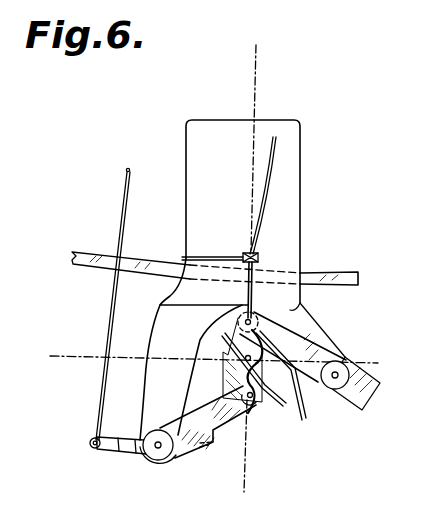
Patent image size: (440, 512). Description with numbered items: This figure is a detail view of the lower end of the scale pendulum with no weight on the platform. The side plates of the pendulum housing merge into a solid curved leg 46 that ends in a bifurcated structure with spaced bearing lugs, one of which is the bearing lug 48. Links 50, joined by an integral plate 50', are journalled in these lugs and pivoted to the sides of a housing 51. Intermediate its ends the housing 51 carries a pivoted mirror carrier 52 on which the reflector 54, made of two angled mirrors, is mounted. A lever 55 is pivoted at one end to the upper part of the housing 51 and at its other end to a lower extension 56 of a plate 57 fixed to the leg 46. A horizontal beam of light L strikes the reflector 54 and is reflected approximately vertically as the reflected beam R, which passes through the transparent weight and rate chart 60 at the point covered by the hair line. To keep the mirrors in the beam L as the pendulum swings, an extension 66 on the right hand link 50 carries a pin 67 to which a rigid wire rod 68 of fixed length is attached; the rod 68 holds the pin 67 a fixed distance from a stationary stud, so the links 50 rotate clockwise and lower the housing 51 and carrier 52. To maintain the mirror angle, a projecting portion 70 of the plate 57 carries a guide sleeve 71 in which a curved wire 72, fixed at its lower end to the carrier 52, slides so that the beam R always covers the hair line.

The reflected beam R is at (261, 264).
The horizontal beam of light L is at (88, 356).
The curved leg 46 is at (205, 148).
The bearing lug 48 is at (170, 392).
The links 50 is at (208, 435).
The integral plate 50' is at (194, 454).
The housing 51 is at (252, 410).
The carrier 52 is at (272, 385).
The reflector 54 is at (272, 393).
The lever 55 is at (321, 399).
The lower extension 56 is at (312, 336).
The plate 57 is at (280, 304).
The weight and rate chart 60 is at (105, 261).
The extension 66 is at (107, 449).
The pin 67 is at (90, 446).
The rigid wire rod 68 is at (100, 398).
The projecting portion 70 is at (285, 258).
The guide sleeve 71 is at (259, 256).
The curved wire 72 is at (270, 184).